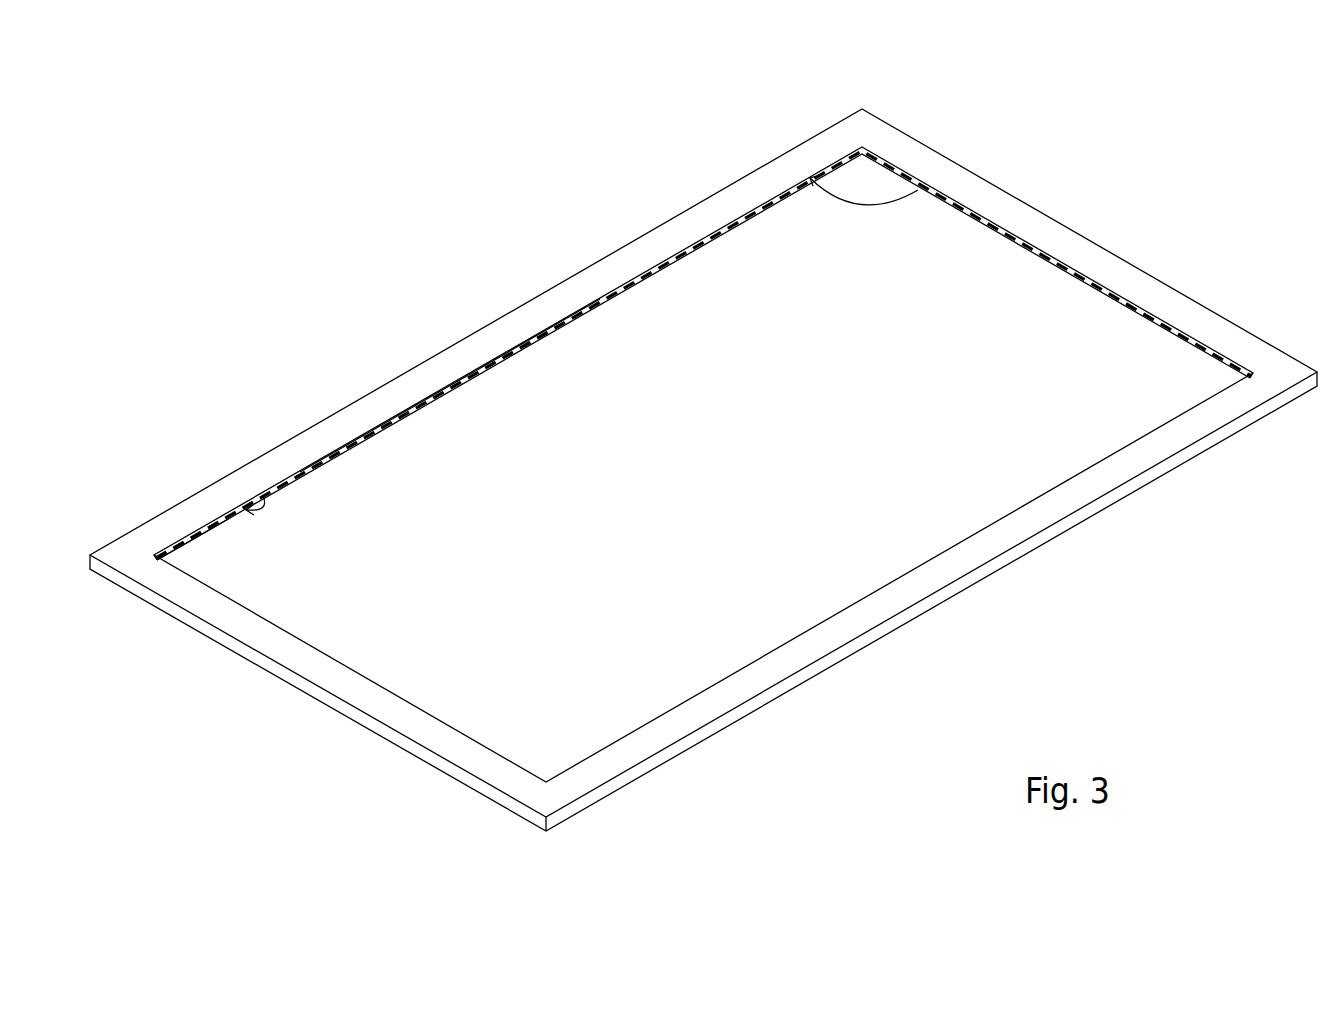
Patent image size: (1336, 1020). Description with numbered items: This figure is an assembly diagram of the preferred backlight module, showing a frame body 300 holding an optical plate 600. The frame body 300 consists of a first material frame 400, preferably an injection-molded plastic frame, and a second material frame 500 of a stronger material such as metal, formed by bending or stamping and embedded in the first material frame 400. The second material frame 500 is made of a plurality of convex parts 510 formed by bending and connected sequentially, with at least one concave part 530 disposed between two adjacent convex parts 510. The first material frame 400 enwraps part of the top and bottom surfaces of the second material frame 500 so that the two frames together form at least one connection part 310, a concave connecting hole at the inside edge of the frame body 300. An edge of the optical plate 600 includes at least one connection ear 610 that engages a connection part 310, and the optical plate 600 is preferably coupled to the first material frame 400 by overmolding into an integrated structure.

The frame body 300 is at (703, 441).
The first material frame 400 is at (807, 160).
The second material frame 500 is at (777, 197).
The convex parts 510 is at (438, 390).
The concave part 530 is at (263, 496).
The connection ear 610 is at (200, 532).
The connection part 310 is at (908, 197).
The optical plate 600 is at (996, 248).